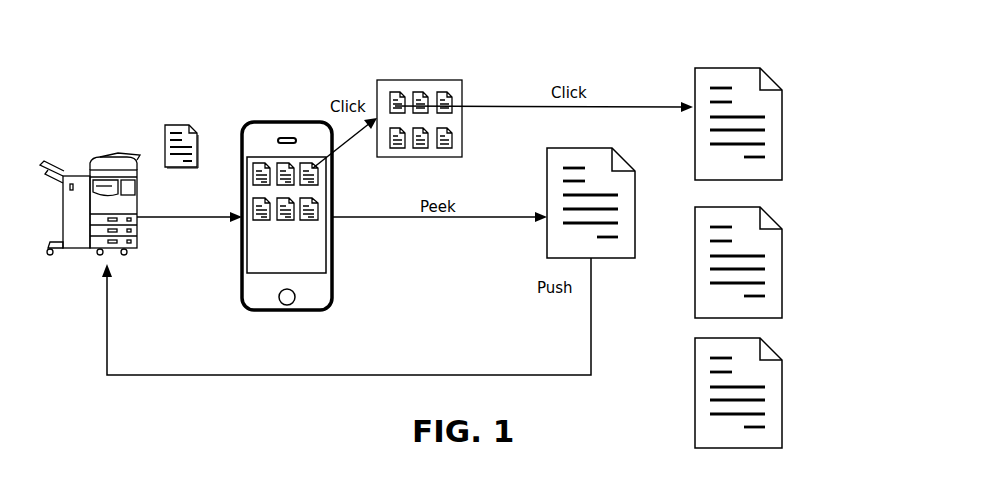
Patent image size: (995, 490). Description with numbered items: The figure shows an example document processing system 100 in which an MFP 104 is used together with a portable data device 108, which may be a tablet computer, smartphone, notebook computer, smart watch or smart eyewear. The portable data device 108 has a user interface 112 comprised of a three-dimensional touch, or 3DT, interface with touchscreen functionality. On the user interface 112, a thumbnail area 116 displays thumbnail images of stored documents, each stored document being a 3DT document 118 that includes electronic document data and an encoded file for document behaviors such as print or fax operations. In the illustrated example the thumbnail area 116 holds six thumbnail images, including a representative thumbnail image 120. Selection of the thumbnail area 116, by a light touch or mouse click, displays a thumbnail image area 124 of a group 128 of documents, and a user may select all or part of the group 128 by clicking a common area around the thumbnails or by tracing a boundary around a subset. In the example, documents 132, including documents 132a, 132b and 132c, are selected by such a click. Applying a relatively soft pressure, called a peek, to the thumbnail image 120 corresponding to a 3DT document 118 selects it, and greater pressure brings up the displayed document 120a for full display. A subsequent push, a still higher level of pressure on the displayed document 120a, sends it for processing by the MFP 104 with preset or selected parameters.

The document processing system 100 is at (636, 46).
The MFP 104 is at (104, 158).
The portable data device 108 is at (281, 122).
The user interface 112 is at (317, 258).
The thumbnail area 116 is at (260, 230).
The 3DT document 118 is at (192, 125).
The thumbnail image 120 is at (312, 222).
The displayed document 120a is at (617, 258).
The thumbnail image area 124 is at (427, 80).
The group of documents 128 is at (393, 92).
The documents 132 is at (744, 56).
The document 132a is at (782, 147).
The document 132b is at (782, 285).
The document 132c is at (782, 415).